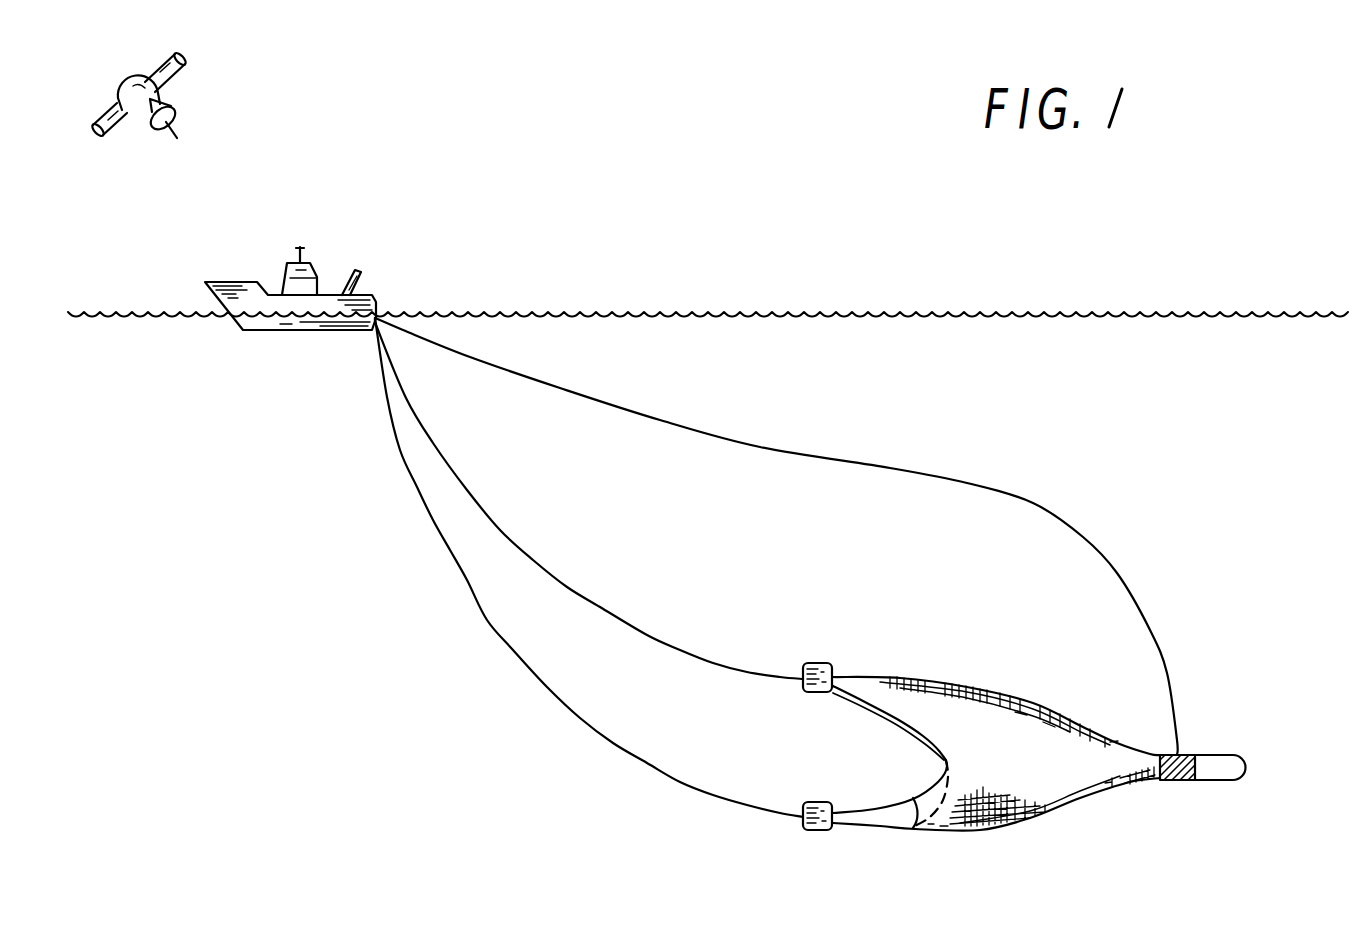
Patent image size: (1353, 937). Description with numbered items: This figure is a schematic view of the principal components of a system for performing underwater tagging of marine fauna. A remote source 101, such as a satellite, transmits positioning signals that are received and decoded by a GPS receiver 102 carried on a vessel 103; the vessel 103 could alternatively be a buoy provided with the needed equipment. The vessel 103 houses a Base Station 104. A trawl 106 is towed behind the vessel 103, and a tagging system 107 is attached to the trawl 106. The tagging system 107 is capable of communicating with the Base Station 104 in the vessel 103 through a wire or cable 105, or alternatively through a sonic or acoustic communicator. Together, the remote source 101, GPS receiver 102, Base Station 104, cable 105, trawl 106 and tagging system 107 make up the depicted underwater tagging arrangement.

The remote source 101 is at (167, 94).
The GPS receiver 102 is at (303, 251).
The vessel 103 is at (312, 330).
The Base Station 104 is at (320, 270).
The wire or cable 105 is at (1028, 500).
The trawl 106 is at (987, 720).
The tagging system 107 is at (1177, 780).